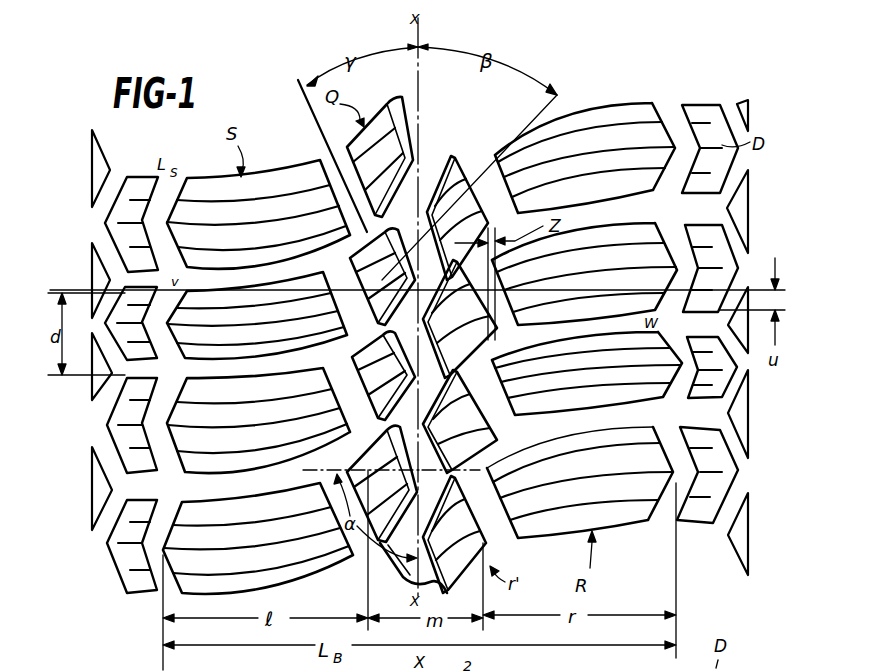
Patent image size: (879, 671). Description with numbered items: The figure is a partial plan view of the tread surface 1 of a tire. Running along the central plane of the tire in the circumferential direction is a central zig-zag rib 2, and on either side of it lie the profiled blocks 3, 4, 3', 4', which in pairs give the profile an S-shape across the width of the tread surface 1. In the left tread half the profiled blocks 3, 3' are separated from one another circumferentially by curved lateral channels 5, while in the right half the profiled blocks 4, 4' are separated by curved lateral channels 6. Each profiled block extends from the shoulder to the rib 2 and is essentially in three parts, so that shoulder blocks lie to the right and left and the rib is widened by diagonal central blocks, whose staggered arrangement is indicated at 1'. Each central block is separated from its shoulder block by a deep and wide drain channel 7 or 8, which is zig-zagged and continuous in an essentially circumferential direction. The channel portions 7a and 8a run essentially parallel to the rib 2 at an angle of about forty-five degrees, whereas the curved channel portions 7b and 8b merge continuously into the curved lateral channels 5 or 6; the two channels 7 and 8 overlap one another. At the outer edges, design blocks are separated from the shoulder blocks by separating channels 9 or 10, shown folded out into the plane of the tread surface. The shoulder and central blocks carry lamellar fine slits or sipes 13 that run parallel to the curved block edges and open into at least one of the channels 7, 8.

The tread surface 1 is at (677, 303).
The staggered arrangement of the diagonal Q blocks 1' is at (319, 156).
The central zig-zag rib 2 is at (421, 130).
The profiled block 3 is at (258, 420).
The profiled block 3' is at (257, 315).
The profiled block 4 is at (584, 274).
The profiled block 4' is at (585, 158).
The lateral channel 5 is at (227, 490).
The lateral channel 6 is at (586, 426).
The drain channel 7 is at (343, 373).
The channel portion 7a is at (338, 276).
The curved channel portion 7b is at (364, 453).
The drain channel 8 is at (484, 388).
The channel portion 8a is at (483, 160).
The curved channel portion 8b is at (498, 443).
The separating channel 9 is at (170, 396).
The separating channel 10 is at (678, 354).
The sipes 13 is at (607, 473).